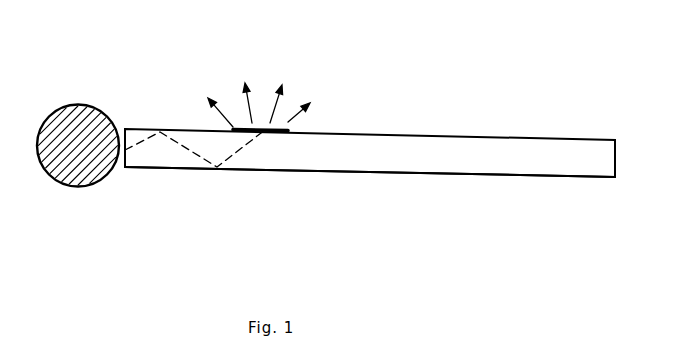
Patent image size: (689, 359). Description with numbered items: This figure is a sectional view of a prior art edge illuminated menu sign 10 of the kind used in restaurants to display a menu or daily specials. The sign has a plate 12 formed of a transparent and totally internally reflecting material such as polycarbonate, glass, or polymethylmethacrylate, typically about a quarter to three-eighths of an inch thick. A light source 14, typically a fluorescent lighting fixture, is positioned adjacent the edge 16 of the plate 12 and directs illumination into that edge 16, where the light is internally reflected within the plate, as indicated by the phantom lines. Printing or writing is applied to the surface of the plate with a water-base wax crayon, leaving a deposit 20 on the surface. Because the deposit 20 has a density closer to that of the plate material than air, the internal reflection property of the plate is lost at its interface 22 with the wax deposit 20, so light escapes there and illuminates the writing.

The edge illuminated menu sign 10 is at (465, 130).
The plate 12 is at (523, 162).
The light source 14 is at (107, 192).
The edge 16 is at (122, 129).
The deposit 20 is at (282, 121).
The interface 22 is at (286, 146).